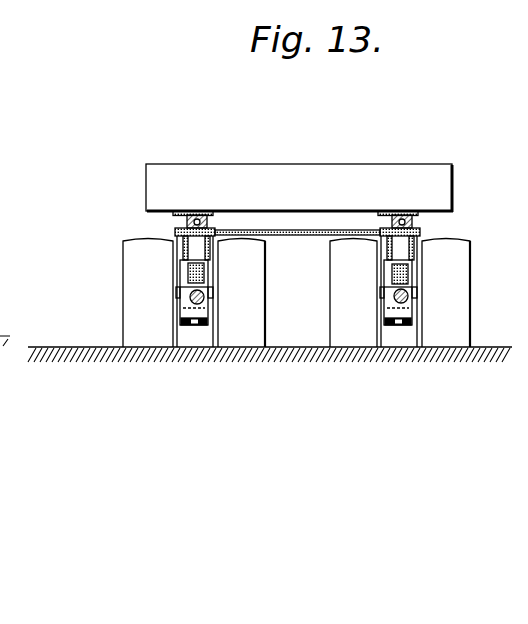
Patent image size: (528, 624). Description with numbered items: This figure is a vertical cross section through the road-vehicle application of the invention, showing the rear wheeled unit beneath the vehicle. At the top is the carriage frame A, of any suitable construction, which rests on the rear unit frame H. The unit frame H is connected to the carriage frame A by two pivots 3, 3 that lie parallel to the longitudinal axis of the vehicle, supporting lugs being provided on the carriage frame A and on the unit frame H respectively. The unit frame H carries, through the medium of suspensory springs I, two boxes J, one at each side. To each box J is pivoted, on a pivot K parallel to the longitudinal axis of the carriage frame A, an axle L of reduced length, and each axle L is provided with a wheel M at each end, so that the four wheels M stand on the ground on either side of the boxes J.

The carriage frame A is at (292, 176).
The pivot 3 is at (200, 215).
The rear unit frame H is at (303, 236).
The wheel M is at (130, 250).
The box J is at (187, 290).
The suspensory spring I is at (202, 271).
The pivot K is at (181, 298).
The axle L is at (211, 292).